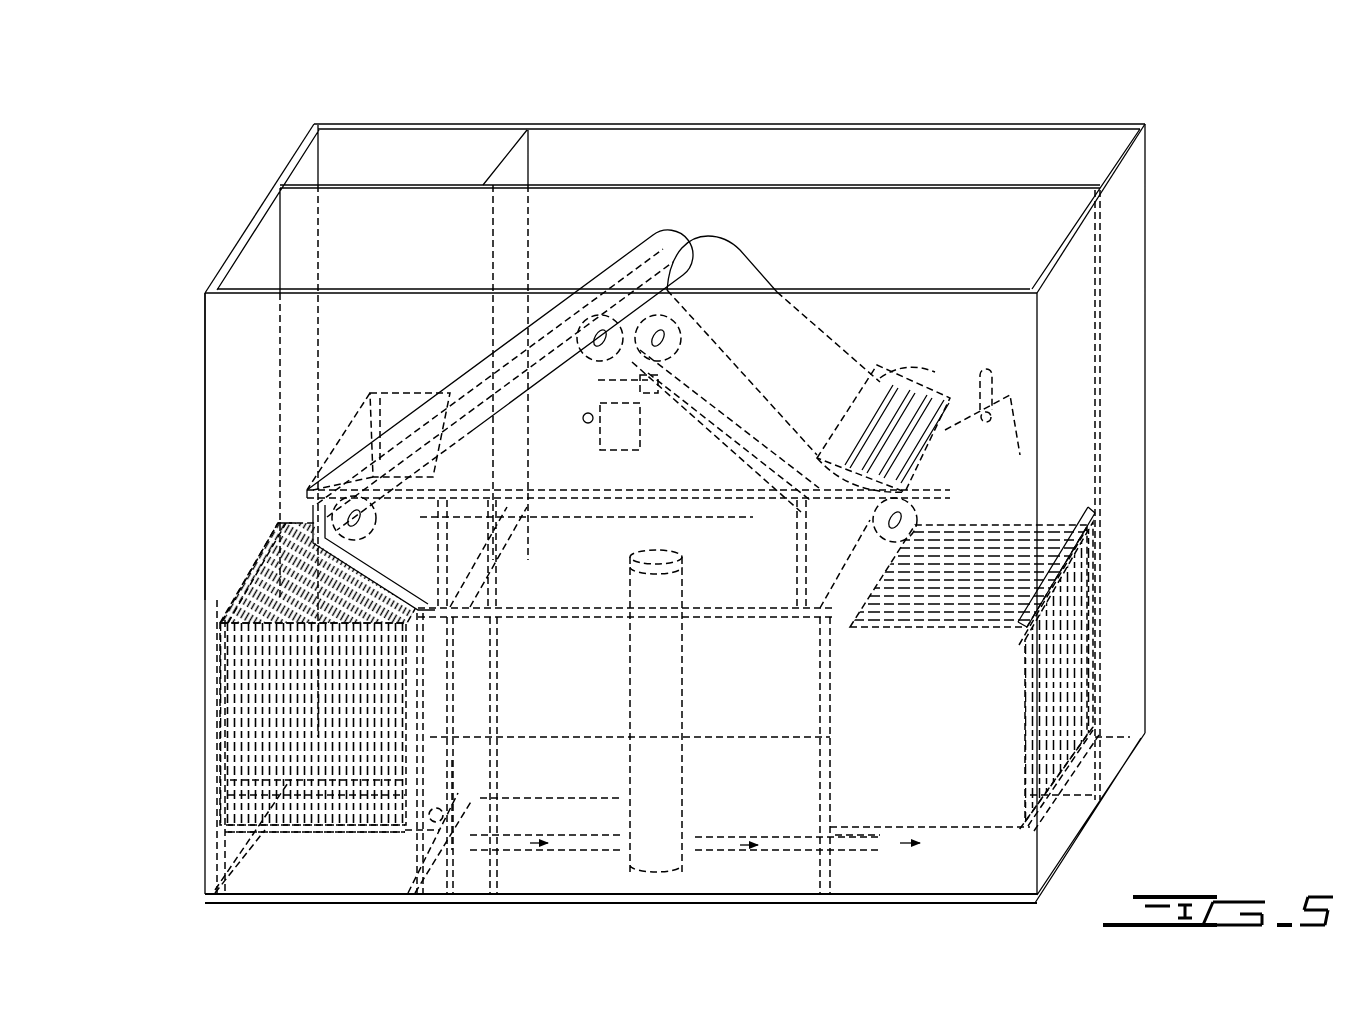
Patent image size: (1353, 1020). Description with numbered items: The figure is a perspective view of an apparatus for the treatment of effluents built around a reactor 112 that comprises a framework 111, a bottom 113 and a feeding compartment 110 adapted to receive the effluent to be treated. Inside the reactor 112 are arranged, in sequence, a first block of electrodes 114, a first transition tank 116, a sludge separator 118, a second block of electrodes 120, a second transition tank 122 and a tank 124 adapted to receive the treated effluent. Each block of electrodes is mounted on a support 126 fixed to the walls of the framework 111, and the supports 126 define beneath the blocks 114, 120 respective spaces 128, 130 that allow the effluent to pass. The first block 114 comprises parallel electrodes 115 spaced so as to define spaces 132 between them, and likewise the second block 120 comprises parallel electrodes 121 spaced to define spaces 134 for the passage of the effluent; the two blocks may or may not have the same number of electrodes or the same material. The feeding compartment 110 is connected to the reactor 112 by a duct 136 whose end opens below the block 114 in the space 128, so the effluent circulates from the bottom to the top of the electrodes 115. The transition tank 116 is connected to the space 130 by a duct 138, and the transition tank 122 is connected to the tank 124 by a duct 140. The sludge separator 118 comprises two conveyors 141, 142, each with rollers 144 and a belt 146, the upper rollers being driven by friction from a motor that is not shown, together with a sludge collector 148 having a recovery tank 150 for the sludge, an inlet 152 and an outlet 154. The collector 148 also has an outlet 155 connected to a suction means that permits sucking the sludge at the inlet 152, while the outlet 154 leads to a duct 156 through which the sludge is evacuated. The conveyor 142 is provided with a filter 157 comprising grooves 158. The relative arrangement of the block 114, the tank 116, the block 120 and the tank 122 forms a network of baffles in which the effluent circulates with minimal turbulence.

The feeding compartment 110 is at (400, 158).
The framework 111 is at (235, 237).
The reactor 112 is at (228, 170).
The bottom 113 is at (716, 903).
The first block of electrodes 114 is at (222, 745).
The electrodes 115 is at (242, 660).
The first transition tank 116 is at (358, 386).
The sludge separator 118 is at (465, 447).
The second block of electrodes 120 is at (1078, 662).
The electrodes 121 is at (1090, 575).
The second transition tank 122 is at (1015, 410).
The tank adapted to receive the treated effluent 124 is at (1050, 158).
The support 126 is at (380, 832).
The space 128 is at (292, 866).
The space 130 is at (985, 855).
The spaces 132 is at (237, 782).
The spaces 134 is at (1033, 517).
The duct 136 is at (441, 855).
The duct 138 is at (490, 857).
The duct 140 is at (990, 380).
The conveyor 141 is at (618, 232).
The conveyor 142 is at (850, 312).
The rollers 144 is at (662, 335).
The belt 146 is at (462, 342).
The sludge collector 148 is at (382, 505).
The recovery tank 150 is at (754, 519).
The inlet 152 is at (650, 392).
The outlet 154 is at (668, 553).
The outlet 155 is at (583, 420).
The duct 156 is at (652, 862).
The filter 157 is at (995, 515).
The grooves 158 is at (888, 375).